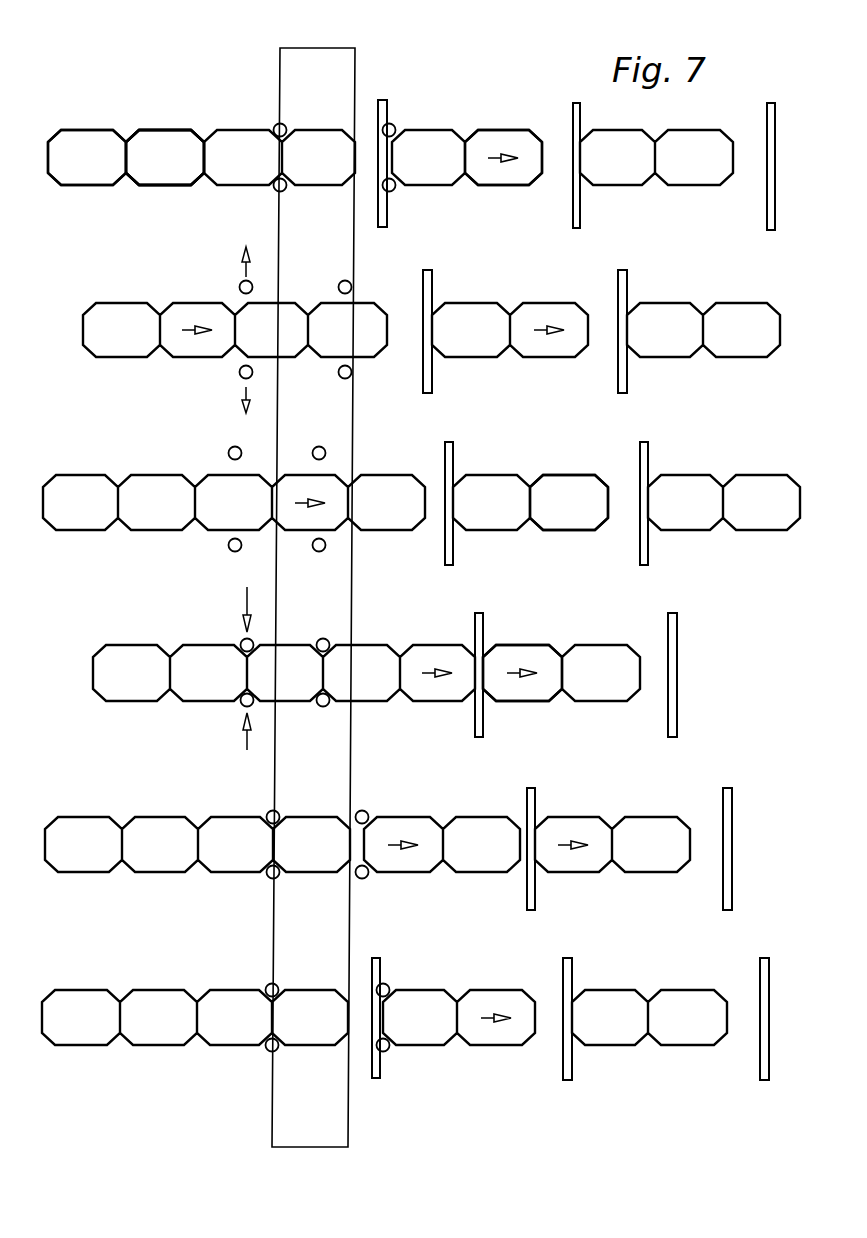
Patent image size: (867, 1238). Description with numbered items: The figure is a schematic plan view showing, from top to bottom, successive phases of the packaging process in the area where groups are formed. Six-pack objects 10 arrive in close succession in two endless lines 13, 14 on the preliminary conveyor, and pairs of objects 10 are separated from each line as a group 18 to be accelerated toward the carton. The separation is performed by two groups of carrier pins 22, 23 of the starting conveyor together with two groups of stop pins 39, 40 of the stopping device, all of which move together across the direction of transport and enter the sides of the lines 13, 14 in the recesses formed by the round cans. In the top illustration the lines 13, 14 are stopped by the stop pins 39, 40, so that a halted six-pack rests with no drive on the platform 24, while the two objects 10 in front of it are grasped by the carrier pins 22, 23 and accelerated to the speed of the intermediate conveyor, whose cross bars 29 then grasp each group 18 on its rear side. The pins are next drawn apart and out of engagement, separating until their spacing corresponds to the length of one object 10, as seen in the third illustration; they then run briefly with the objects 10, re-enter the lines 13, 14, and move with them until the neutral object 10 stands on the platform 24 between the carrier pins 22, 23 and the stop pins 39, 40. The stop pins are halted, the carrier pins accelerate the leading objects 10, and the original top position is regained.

The object 10 is at (88, 168).
The line 13 is at (151, 112).
The line 14 is at (165, 157).
The group 18 is at (468, 118).
The carrier pin 22 is at (350, 283).
The carrier pin 23 is at (350, 377).
The platform 24 is at (308, 60).
The cross bar 29 is at (383, 215).
The stop pin 39 is at (239, 288).
The stop pin 40 is at (239, 373).